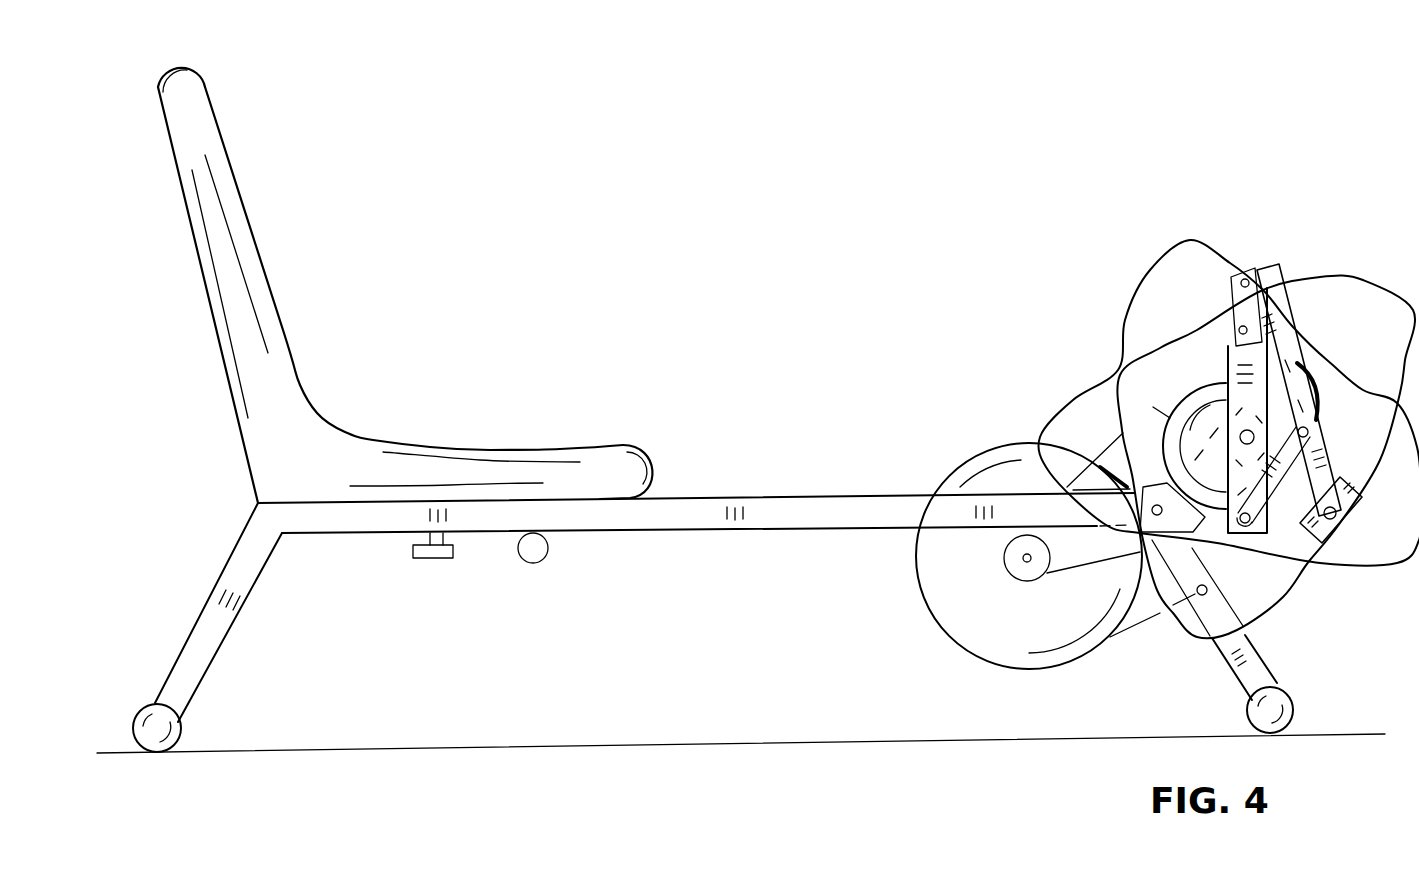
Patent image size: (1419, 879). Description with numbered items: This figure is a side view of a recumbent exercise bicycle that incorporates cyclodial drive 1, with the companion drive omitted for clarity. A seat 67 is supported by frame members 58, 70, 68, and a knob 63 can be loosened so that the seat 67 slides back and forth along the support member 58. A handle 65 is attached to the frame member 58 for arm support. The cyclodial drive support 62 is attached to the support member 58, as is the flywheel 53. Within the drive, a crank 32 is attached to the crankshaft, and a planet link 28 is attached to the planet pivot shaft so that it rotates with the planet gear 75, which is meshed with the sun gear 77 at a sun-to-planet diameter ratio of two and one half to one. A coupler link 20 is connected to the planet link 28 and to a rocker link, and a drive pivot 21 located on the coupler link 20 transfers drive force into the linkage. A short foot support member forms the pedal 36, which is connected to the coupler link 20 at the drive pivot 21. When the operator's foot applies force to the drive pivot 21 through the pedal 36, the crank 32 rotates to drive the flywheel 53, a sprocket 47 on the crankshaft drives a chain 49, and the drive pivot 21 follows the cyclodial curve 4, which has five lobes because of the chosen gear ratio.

The cyclodial drive 1 is at (1322, 254).
The cyclodial curve 4 is at (1198, 238).
The coupler link 20 is at (1270, 340).
The drive pivot 21 is at (1343, 521).
The planet link 28 is at (1232, 300).
The crank 32 is at (1225, 380).
The pedal 36 is at (1350, 497).
The sprocket 47 is at (1163, 440).
The chain 49 is at (1153, 407).
The flywheel 53 is at (920, 592).
The support member 58 is at (845, 495).
The cyclodial drive support 62 is at (1207, 548).
The knob 63 is at (445, 558).
The handle 65 is at (543, 560).
The seat 67 is at (237, 212).
The frame member 68 is at (1290, 697).
The frame member 70 is at (182, 722).
The planet gear 75 is at (1218, 332).
The sun gear 77 is at (1320, 396).